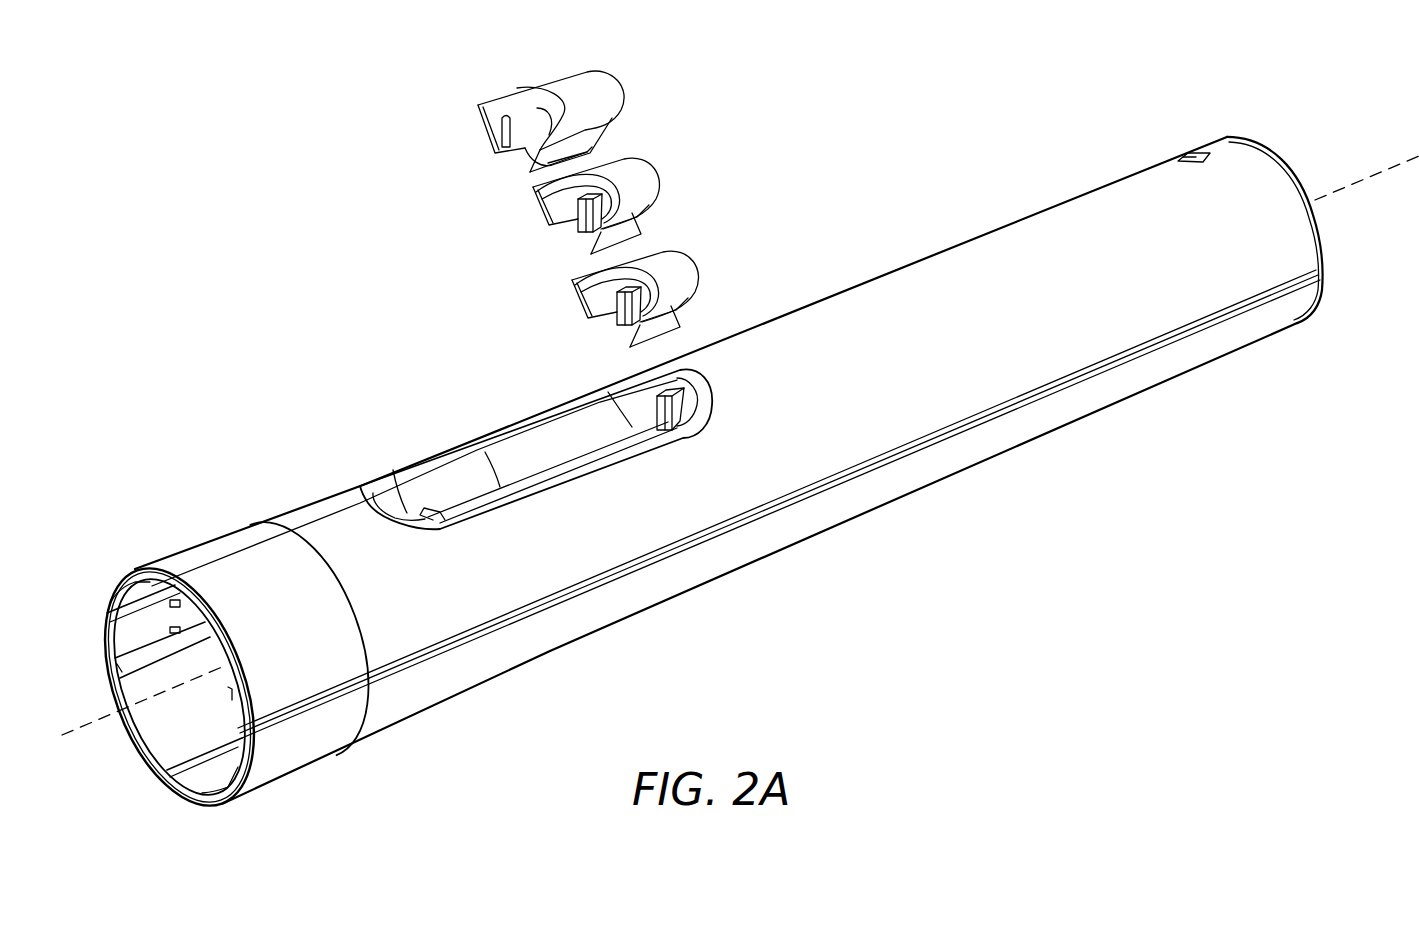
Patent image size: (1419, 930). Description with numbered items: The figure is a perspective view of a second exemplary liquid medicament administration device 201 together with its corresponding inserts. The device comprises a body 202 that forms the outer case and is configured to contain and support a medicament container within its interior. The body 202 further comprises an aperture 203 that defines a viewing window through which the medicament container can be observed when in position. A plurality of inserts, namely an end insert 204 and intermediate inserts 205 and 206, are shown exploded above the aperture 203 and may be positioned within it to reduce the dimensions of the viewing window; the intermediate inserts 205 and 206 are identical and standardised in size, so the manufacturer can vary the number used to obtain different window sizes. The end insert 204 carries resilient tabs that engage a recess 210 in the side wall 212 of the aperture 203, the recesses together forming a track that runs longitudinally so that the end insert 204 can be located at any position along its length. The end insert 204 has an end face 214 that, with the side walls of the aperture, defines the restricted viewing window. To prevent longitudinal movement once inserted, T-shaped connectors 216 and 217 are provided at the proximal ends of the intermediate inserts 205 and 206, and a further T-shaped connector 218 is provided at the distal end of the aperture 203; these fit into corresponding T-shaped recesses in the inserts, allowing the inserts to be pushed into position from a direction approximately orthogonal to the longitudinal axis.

The liquid medicament administration device 201 is at (1082, 432).
The body 202 is at (980, 243).
The aperture 203 is at (523, 493).
The end insert 204 is at (600, 84).
The intermediate insert 205 is at (640, 175).
The intermediate insert 206 is at (684, 266).
The recess 210 is at (557, 447).
The side wall 212 is at (443, 488).
The end face 214 is at (530, 103).
The T-shaped connector 216 is at (576, 240).
The T-shaped connector 217 is at (624, 333).
The T-shaped connector 218 is at (681, 435).